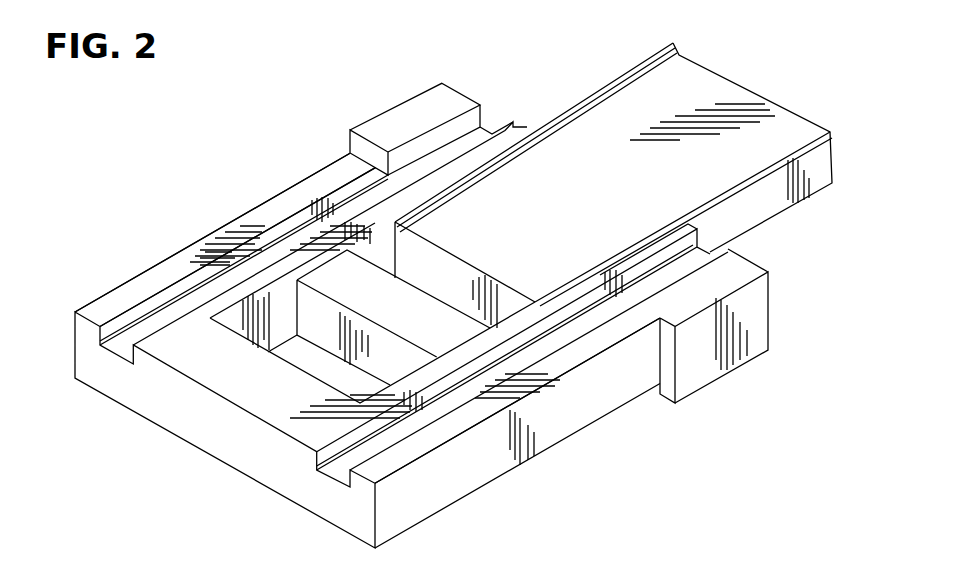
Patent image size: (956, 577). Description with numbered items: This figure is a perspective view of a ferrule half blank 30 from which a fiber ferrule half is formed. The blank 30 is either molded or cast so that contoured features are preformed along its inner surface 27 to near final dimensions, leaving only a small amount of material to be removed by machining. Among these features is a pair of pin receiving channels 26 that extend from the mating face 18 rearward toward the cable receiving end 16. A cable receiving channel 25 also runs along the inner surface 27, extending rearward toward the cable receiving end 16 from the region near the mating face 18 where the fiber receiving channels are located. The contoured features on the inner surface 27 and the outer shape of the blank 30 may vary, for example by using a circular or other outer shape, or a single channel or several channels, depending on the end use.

The cable receiving end 16 is at (720, 77).
The mating face 18 is at (83, 345).
The cable receiving channel 25 is at (548, 236).
The pin receiving channels 26 is at (160, 290).
The inner surface 27 is at (303, 187).
The ferrule half blank 30 is at (462, 73).